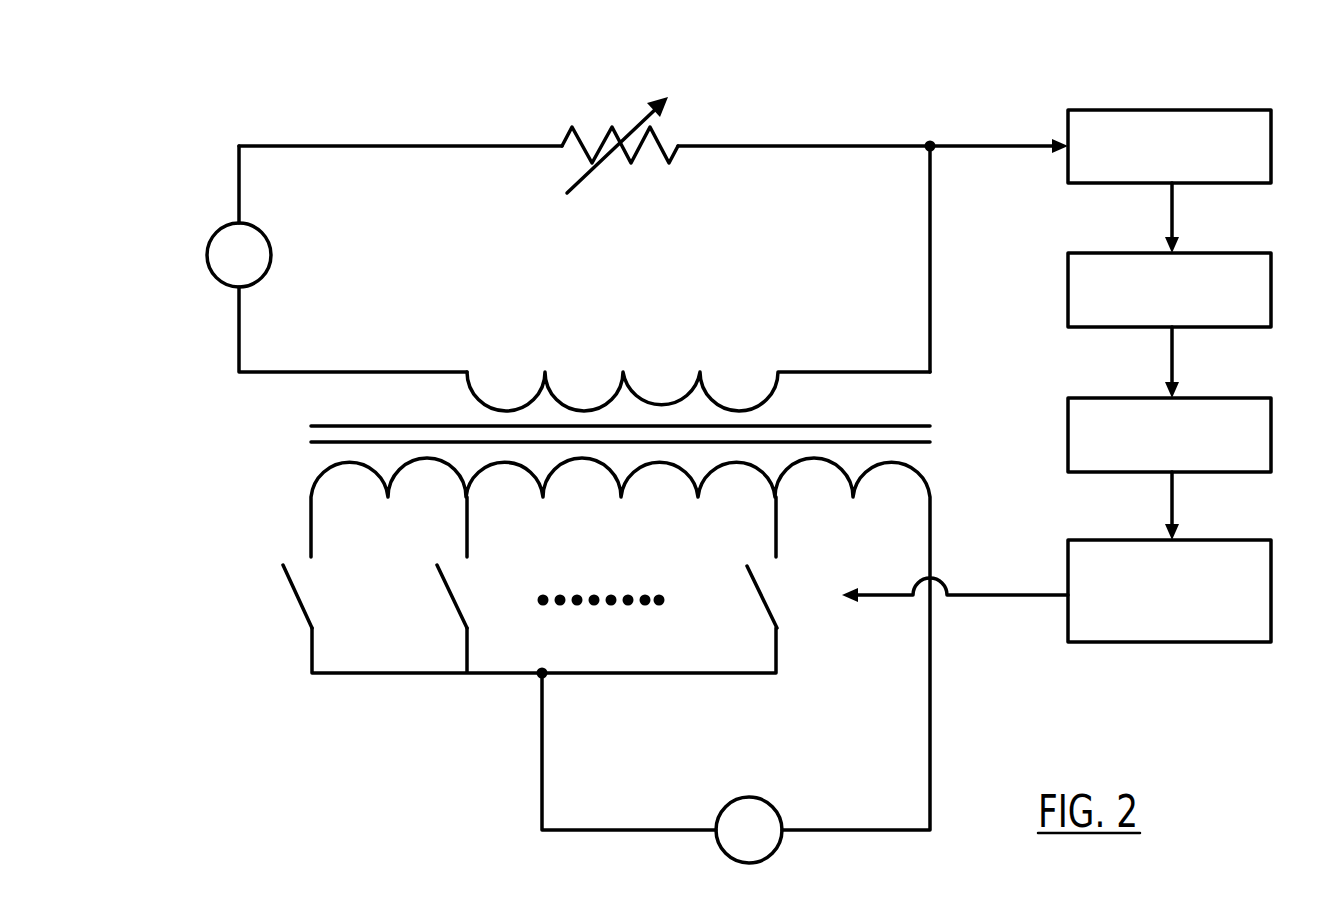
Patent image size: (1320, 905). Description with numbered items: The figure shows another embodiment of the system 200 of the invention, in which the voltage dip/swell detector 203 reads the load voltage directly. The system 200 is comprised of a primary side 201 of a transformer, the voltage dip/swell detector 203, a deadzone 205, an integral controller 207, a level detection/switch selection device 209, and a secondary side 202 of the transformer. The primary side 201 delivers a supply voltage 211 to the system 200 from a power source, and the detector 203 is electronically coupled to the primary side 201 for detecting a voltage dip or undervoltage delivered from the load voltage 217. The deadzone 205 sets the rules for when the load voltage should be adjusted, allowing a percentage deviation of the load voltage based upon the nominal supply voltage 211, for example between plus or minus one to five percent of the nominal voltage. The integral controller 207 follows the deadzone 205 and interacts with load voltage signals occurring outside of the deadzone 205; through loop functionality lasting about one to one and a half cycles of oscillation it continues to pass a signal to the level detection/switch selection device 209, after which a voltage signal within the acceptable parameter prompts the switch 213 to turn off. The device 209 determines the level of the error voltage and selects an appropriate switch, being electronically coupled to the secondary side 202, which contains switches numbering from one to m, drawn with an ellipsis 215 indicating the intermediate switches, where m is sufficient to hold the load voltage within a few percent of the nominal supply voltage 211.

The system 200 is at (195, 440).
The primary side 201 is at (733, 145).
The secondary side 202 is at (930, 638).
The voltage dip/swell detector 203 is at (1228, 110).
The deadzone 205 is at (1228, 253).
The integral controller 207 is at (1228, 398).
The level detection/switch selection device 209 is at (1228, 540).
The supply voltage 211 is at (207, 250).
The switch 213 is at (292, 592).
The additional switches (ellipsis) 215 is at (598, 620).
The load voltage 217 is at (588, 127).